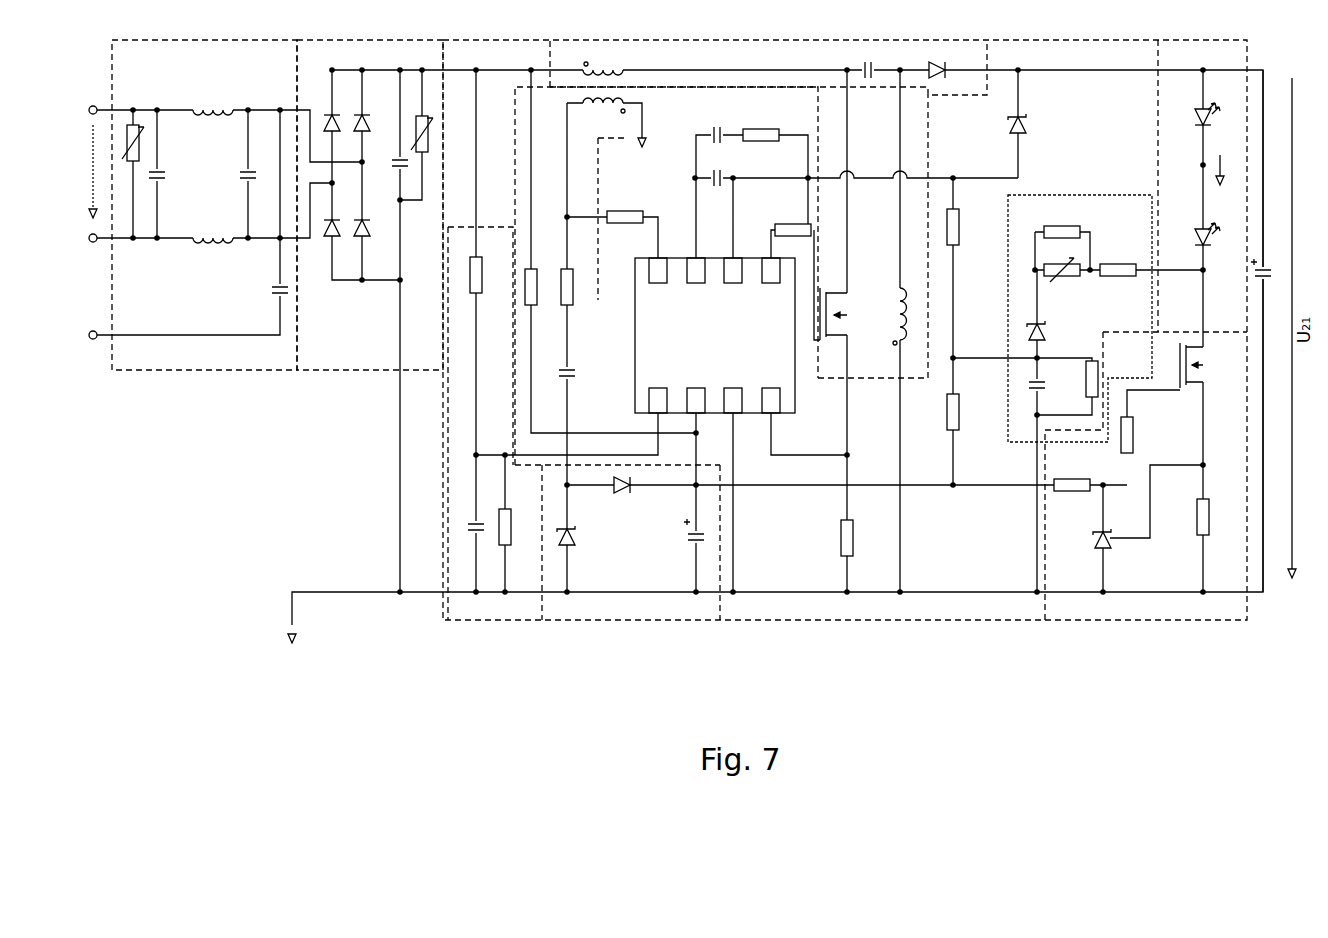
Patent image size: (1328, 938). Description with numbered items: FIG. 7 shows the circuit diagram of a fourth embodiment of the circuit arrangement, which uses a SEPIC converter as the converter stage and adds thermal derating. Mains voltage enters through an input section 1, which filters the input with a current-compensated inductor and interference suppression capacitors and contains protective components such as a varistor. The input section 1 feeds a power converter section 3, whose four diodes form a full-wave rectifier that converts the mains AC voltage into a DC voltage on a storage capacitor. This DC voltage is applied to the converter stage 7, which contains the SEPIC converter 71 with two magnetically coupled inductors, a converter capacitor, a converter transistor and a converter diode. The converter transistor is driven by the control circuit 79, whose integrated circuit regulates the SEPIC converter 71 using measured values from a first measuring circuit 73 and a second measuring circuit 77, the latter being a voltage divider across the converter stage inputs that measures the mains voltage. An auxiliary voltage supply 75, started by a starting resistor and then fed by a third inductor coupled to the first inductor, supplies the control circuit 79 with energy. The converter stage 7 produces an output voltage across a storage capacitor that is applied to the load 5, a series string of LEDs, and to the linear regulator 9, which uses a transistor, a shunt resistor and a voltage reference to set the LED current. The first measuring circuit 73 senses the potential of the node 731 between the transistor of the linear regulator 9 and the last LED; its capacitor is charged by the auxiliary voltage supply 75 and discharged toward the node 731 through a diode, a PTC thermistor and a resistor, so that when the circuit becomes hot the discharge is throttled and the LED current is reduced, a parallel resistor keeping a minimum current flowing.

The input section 1 is at (162, 70).
The power converter section 3 is at (390, 70).
The load 5 is at (1227, 66).
The converter stage 7 is at (462, 70).
The linear regulator 9 is at (1229, 587).
The SEPIC converter 71 is at (581, 66).
The first measuring circuit 73 is at (1033, 221).
The auxiliary voltage supply 75 is at (638, 582).
The second measuring circuit 77 is at (508, 382).
The control circuit 79 is at (662, 192).
The node 731 is at (1220, 270).